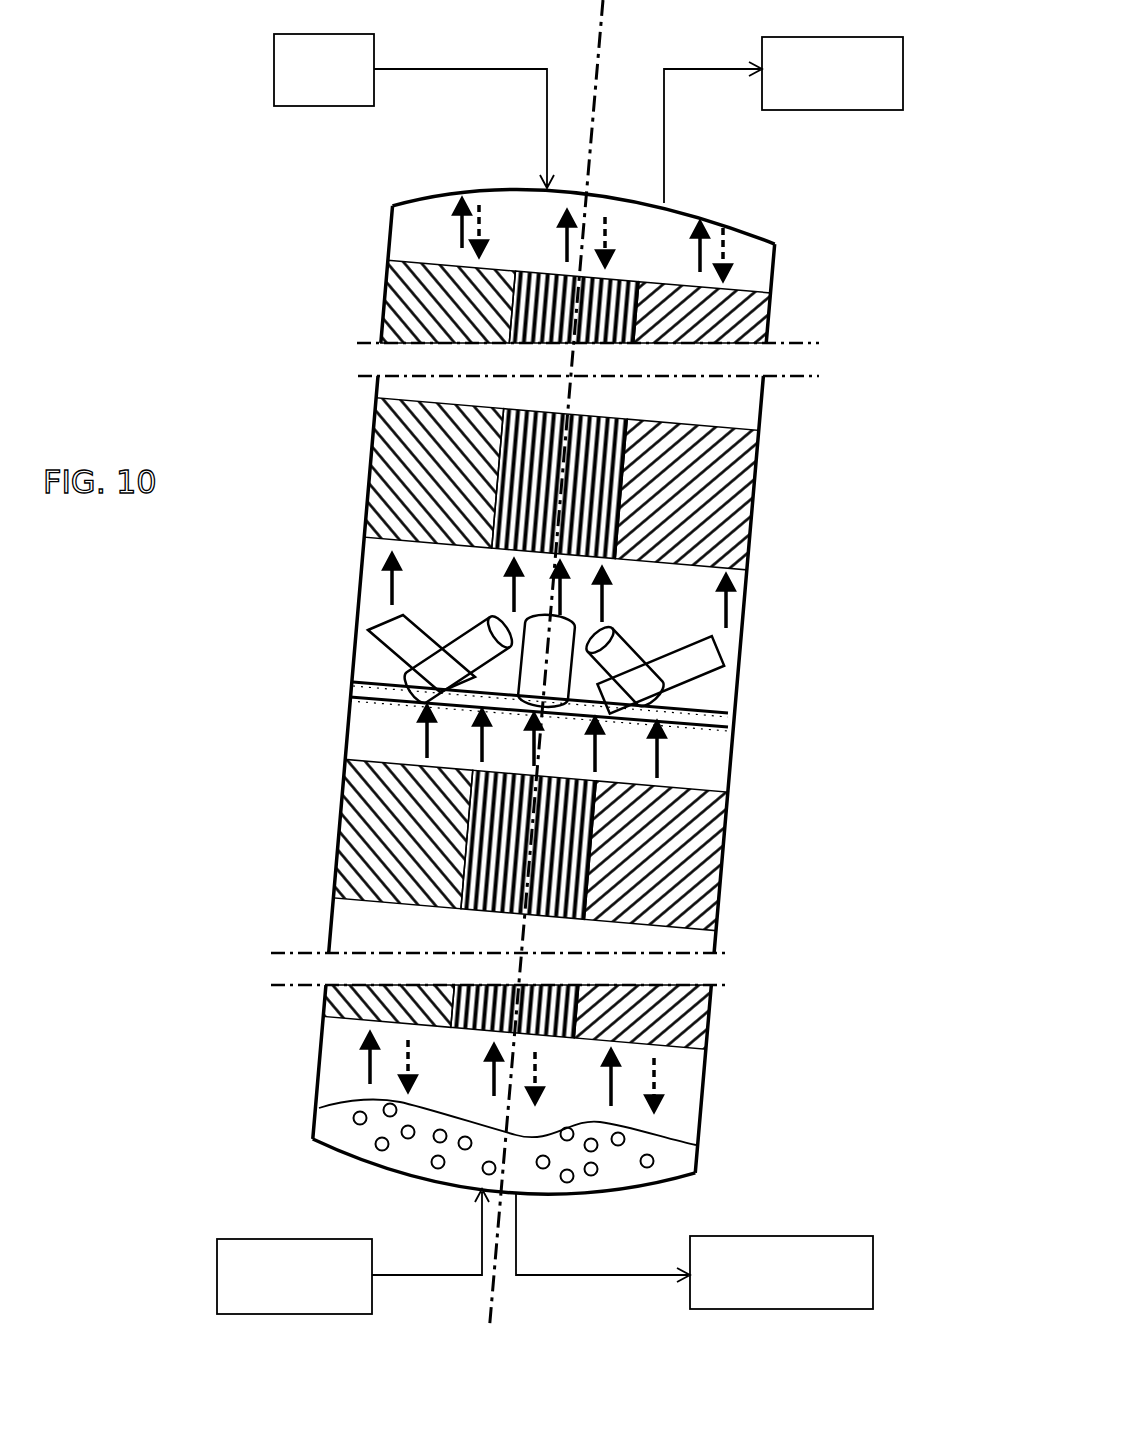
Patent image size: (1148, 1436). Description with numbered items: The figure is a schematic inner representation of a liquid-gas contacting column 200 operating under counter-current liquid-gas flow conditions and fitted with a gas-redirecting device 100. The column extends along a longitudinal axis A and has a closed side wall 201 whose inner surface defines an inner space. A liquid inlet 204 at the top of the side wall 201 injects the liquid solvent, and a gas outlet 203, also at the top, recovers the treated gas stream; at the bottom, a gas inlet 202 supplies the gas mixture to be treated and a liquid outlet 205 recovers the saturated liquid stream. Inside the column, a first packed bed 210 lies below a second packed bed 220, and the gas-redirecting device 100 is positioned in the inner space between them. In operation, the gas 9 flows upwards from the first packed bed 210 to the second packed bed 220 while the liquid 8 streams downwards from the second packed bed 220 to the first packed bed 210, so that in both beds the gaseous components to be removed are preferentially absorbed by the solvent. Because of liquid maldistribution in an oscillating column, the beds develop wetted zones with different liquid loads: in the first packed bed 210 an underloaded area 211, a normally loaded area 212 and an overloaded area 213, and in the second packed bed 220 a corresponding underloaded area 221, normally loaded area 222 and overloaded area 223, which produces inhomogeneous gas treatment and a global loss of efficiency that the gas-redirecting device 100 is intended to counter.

The longitudinal axis A is at (632, 8).
The liquid-gas contacting column 200 is at (143, 269).
The closed side wall 201 is at (356, 633).
The gas inlet 202 is at (482, 1192).
The gas outlet 203 is at (664, 120).
The liquid inlet 204 is at (547, 112).
The liquid outlet 205 is at (518, 1205).
The first packed bed 210 is at (545, 846).
The underloaded area 211 is at (368, 847).
The normally loaded area 212 is at (515, 821).
The overloaded area 213 is at (703, 894).
The second packed bed 220 is at (581, 487).
The underloaded area 221 is at (415, 487).
The normally loaded area 222 is at (590, 459).
The overloaded area 223 is at (740, 527).
The gas-redirecting device 100 is at (717, 712).
The gas 9 is at (351, 1074).
The liquid 8 is at (673, 1084).